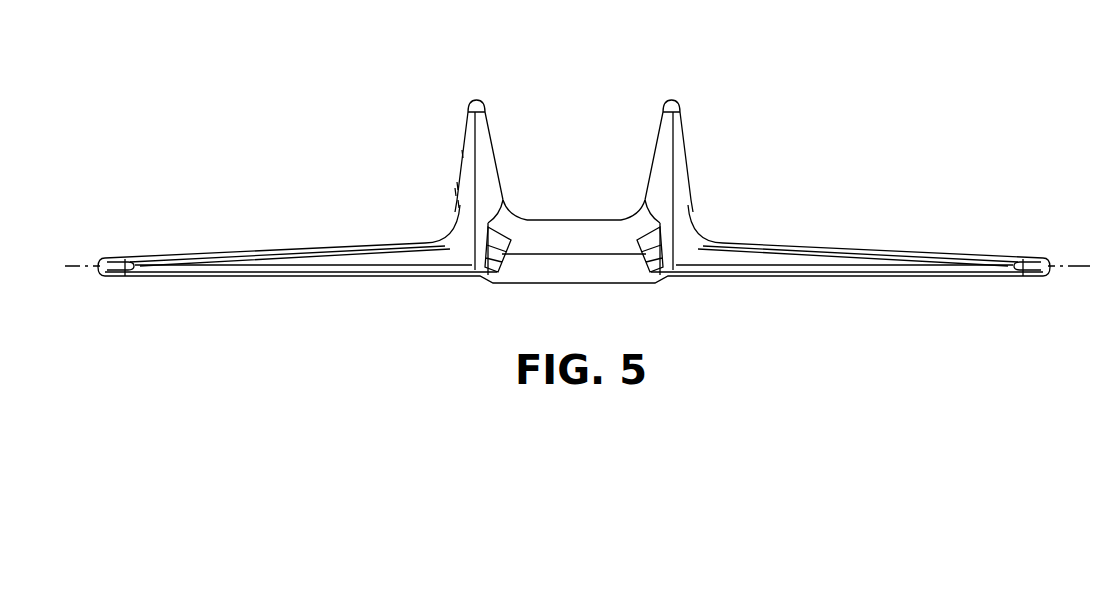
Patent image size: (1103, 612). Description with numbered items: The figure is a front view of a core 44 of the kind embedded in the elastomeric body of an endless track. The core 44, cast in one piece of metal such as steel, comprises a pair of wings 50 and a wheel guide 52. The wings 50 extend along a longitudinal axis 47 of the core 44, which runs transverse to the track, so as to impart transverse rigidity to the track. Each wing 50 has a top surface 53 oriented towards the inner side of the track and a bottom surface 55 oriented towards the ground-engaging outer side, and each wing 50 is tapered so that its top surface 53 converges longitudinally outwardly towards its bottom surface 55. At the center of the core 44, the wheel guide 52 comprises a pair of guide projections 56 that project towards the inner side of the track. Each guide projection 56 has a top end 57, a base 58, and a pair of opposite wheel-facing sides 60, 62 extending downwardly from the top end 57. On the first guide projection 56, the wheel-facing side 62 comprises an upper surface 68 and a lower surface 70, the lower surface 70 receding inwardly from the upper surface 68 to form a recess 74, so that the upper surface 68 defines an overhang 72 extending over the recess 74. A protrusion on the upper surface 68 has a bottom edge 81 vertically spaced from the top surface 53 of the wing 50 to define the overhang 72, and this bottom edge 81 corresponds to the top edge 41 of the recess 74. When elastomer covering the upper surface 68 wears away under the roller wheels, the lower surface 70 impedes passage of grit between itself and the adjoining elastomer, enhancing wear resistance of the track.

The core 44 is at (243, 118).
The longitudinal axis of the core 47 is at (1063, 262).
The wing 50 is at (303, 265).
The wheel guide 52 is at (427, 92).
The top surface 53 is at (230, 248).
The bottom surface 55 is at (193, 277).
The guide projection 56 is at (477, 131).
The top end 57 is at (478, 101).
The base 58 is at (463, 232).
The wheel-facing side 60 is at (497, 139).
The wheel-facing side 62 is at (456, 138).
The upper surface 68 is at (460, 153).
The lower surface 70 is at (460, 203).
The overhang 72 is at (455, 185).
The recess 74 is at (457, 211).
The bottom edge 81 is at (394, 174).
The top edge 41 is at (453, 190).